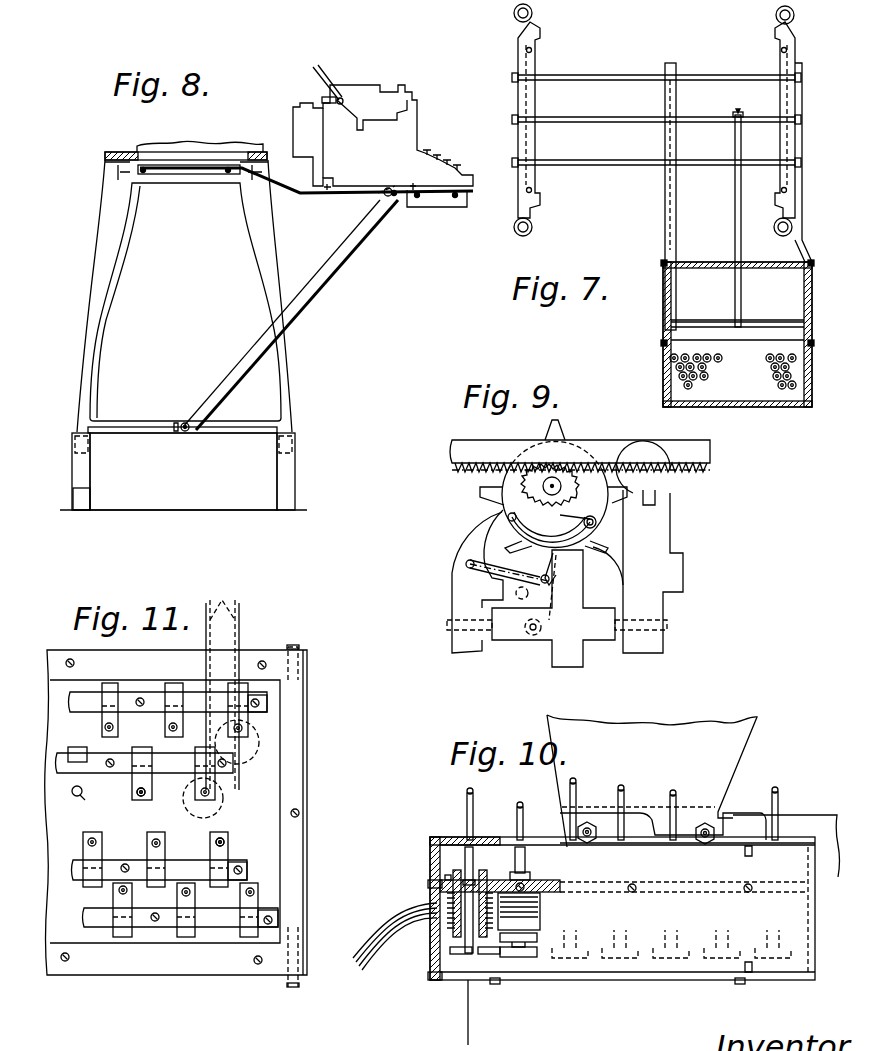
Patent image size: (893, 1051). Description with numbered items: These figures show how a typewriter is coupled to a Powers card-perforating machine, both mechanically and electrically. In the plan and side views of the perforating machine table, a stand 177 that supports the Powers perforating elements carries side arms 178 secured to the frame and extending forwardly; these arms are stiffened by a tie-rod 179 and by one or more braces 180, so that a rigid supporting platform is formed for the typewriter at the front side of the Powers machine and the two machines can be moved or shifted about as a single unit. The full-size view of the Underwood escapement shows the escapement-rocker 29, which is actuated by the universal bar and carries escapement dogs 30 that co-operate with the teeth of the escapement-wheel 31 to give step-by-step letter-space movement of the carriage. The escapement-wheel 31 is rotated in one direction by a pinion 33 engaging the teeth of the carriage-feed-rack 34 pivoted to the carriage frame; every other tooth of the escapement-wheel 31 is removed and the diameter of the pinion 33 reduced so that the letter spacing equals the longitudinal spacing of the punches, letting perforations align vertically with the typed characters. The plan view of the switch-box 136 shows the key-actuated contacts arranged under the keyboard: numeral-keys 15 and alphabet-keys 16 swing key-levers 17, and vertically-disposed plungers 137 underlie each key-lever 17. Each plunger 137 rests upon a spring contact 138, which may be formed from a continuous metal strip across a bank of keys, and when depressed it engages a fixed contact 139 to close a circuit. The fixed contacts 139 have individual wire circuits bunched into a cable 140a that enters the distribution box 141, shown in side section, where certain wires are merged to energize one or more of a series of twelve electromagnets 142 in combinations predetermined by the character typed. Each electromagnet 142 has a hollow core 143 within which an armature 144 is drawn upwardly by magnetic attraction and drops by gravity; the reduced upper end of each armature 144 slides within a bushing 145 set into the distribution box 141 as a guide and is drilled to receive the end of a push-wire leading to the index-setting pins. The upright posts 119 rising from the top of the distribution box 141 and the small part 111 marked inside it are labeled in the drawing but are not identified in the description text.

In FIG. 8, the stand 177 is at (139, 243).
In FIG. 7, the stand 177 is at (573, 70).
In FIG. 8, the side arms 178 is at (307, 192).
In FIG. 7, the side arms 178 is at (665, 214).
In FIG. 8, the tie-rod 179 is at (390, 198).
In FIG. 7, the tie-rod 179 is at (756, 320).
In FIG. 8, the braces 180 is at (328, 261).
In FIG. 7, the braces 180 is at (737, 221).
In FIG. 7, the plungers 137 is at (706, 368).
In FIG. 11, the plungers 137 is at (144, 793).
In FIG. 9, the carriage-feed-rack 34 is at (580, 456).
In FIG. 9, the escapement-wheel 31 is at (553, 486).
In FIG. 9, the pinion 33 is at (576, 492).
In FIG. 9, the escapement dogs 30 is at (550, 597).
In FIG. 9, the escapement-rocker 29 is at (557, 608).
In FIG. 11, the switch-box 136 is at (303, 798).
In FIG. 11, the key-levers 17 is at (223, 686).
In FIG. 11, the spring contact 138 is at (170, 718).
In FIG. 11, the numeral-keys 15 is at (248, 762).
In FIG. 11, the alphabet-keys 16 is at (223, 811).
In FIG. 11, the fixed contact 139 is at (77, 806).
In FIG. 10, the post 119 is at (517, 818).
In FIG. 10, the distribution box 141 is at (430, 857).
In FIG. 10, the bushing 145 is at (515, 852).
In FIG. 10, the electromagnets 142 is at (519, 902).
In FIG. 10, the hollow core 143 is at (452, 935).
In FIG. 10, the spring 111 is at (457, 869).
In FIG. 10, the armature 144 is at (455, 950).
In FIG. 10, the cable 140a is at (395, 933).